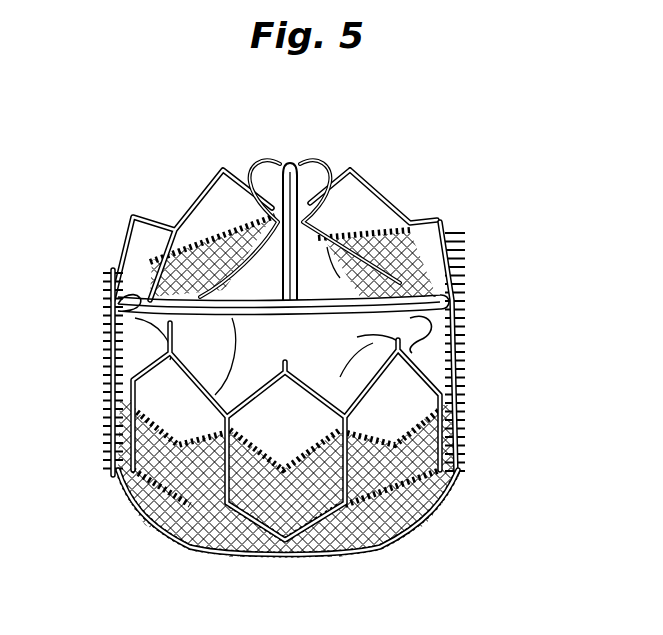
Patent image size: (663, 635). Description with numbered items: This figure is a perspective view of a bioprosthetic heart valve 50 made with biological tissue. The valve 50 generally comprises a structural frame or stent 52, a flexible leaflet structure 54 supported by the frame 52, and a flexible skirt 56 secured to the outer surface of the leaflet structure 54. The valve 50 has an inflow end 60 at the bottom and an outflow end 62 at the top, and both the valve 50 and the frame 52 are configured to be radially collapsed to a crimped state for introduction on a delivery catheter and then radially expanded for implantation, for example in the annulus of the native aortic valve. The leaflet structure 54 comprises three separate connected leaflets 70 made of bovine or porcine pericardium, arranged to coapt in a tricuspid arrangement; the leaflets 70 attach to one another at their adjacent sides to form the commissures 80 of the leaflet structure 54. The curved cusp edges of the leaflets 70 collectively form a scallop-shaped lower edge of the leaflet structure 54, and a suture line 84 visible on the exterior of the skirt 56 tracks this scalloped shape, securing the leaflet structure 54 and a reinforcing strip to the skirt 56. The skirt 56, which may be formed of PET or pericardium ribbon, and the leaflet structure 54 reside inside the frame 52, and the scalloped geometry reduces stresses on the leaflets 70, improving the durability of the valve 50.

The bioprosthetic heart valve 50 is at (386, 180).
The structural frame or stent 52 is at (328, 394).
The flexible leaflet structure 54 is at (190, 333).
The flexible skirt 56 is at (403, 493).
The inflow end 60 is at (162, 545).
The outflow end 62 is at (168, 198).
The leaflets 70 is at (108, 312).
The commissures 80 is at (432, 287).
The suture line 84 is at (175, 488).